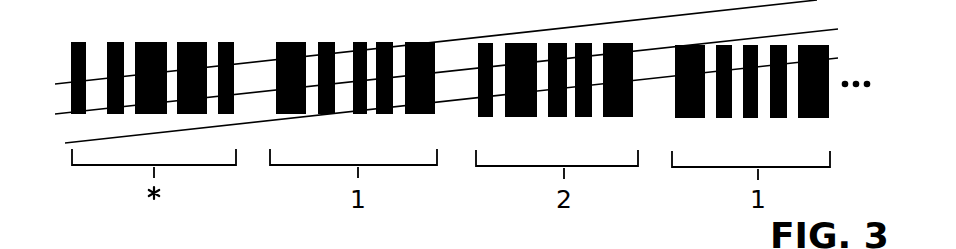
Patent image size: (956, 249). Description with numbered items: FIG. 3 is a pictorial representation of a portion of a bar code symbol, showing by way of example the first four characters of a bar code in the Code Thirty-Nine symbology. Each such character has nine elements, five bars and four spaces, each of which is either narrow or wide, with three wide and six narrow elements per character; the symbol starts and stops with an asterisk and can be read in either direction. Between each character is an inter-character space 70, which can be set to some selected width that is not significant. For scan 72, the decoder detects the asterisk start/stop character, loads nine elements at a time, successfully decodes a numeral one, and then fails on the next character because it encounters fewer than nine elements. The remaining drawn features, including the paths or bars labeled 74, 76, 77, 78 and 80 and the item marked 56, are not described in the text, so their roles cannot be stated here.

The inter-character space 70 is at (246, 57).
The scan 72 is at (63, 84).
The second conductor line 74 is at (62, 114).
The third conductor line 76 is at (65, 143).
The first electrode bar 77 is at (80, 42).
The electrode bar 78 is at (488, 42).
The electrode bar 80 is at (584, 117).
The reference element 56 is at (624, 241).